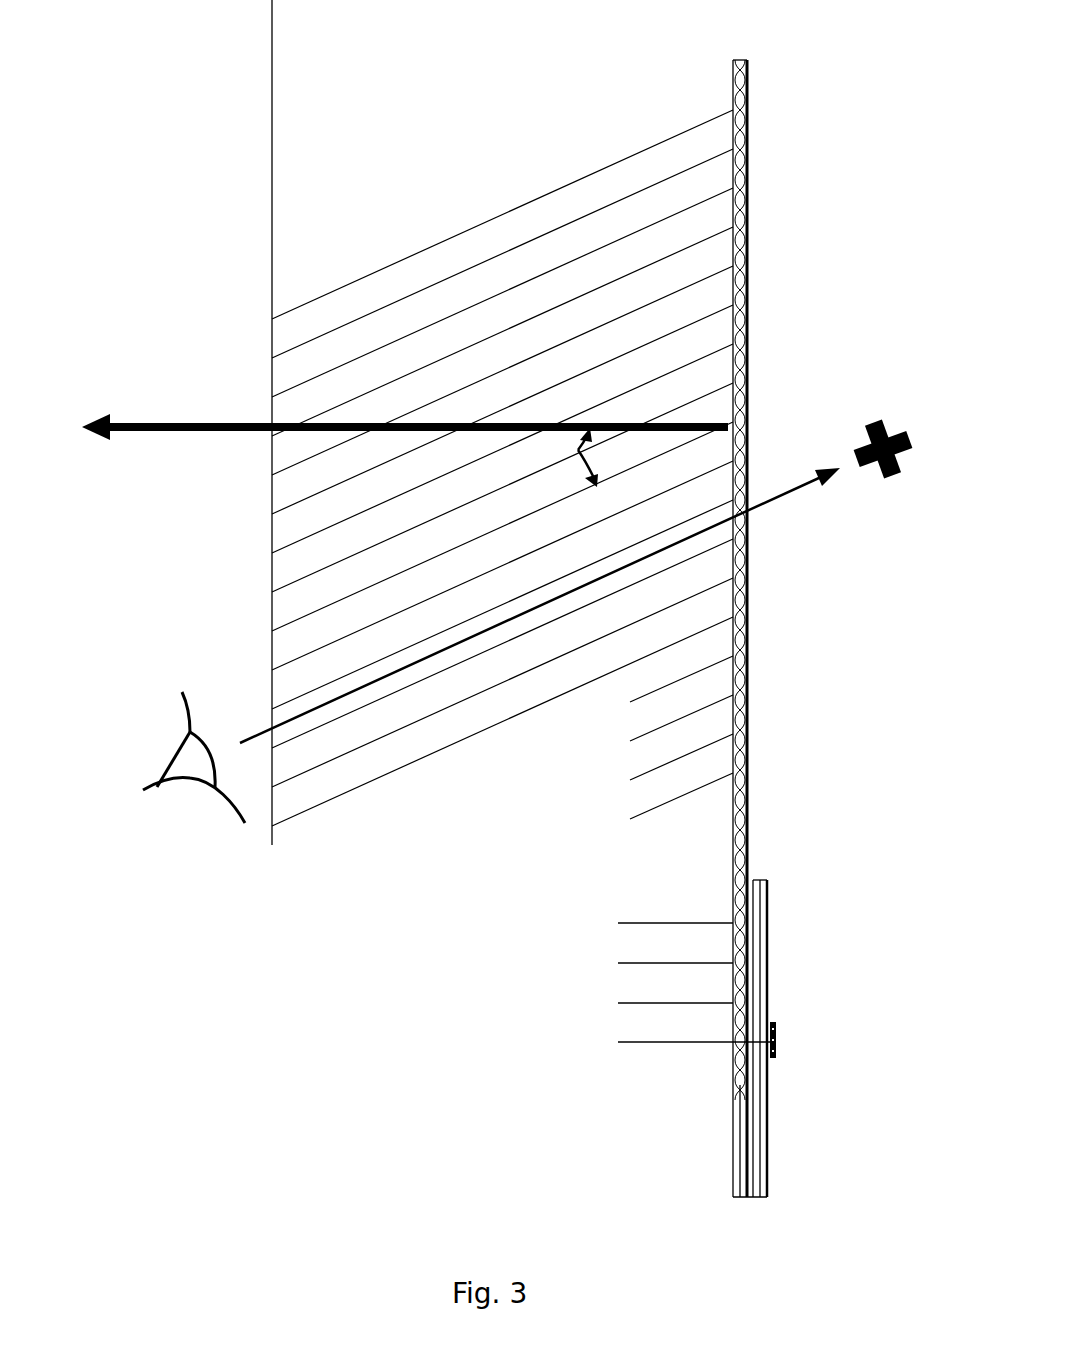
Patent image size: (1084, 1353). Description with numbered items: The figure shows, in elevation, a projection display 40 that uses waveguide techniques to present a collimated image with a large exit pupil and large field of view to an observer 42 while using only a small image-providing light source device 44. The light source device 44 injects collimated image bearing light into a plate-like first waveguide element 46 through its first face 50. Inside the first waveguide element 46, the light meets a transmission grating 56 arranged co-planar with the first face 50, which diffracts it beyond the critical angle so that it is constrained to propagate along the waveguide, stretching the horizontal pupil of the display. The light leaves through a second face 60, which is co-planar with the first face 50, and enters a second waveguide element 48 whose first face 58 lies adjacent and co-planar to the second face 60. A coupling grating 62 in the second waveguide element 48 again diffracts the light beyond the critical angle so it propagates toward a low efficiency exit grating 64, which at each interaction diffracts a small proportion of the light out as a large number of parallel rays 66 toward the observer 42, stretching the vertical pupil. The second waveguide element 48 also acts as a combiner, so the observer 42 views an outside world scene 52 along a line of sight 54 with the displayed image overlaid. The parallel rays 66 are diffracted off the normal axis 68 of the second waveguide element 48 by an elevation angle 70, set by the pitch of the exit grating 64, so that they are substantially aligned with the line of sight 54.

The projection display 40 is at (835, 255).
The observer 42 is at (197, 765).
The image-providing light source device 44 is at (777, 1032).
The first waveguide element 46 is at (763, 903).
The second waveguide element 48 is at (747, 643).
The first face 50 is at (767, 945).
The outside world scene 52 is at (871, 432).
The line of sight 54 is at (805, 483).
The transmission grating 56 is at (762, 1138).
The first face of the second waveguide element 58 is at (748, 762).
The second face of the first waveguide element 60 is at (752, 1182).
The coupling grating 62 is at (742, 1092).
The exit grating 64 is at (740, 97).
The parallel rays 66 is at (479, 745).
The normal axis 68 is at (190, 433).
The elevation angle 70 is at (578, 450).